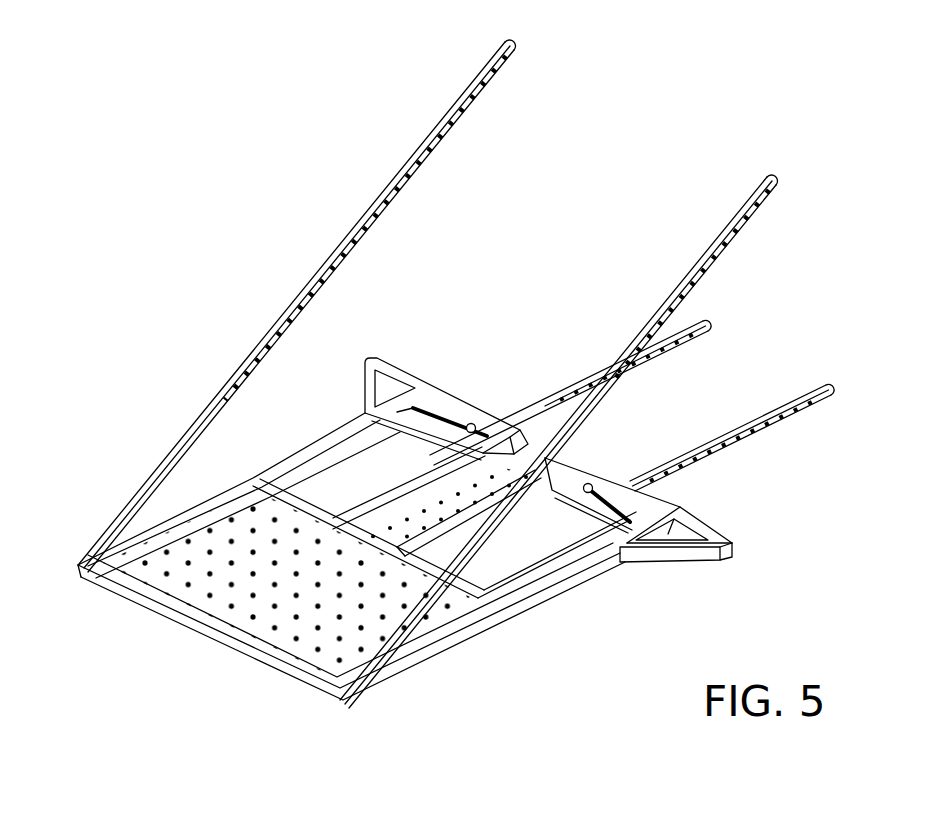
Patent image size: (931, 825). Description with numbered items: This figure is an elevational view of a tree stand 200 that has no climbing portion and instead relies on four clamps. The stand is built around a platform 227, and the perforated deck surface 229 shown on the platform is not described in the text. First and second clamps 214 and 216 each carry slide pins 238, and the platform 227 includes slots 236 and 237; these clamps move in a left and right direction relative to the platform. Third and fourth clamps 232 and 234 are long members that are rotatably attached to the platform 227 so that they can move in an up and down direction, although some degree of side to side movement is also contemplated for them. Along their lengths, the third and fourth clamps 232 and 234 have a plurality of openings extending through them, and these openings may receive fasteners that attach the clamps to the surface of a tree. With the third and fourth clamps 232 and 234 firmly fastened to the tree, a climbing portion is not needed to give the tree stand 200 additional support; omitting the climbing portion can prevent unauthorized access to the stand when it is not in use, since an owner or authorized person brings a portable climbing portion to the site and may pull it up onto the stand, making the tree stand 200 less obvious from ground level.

The tree stand 200 is at (262, 185).
The first clamp 214 is at (708, 326).
The second clamp 216 is at (783, 402).
The platform 227 is at (427, 395).
The perforated base panel 229 is at (237, 622).
The third clamp 232 is at (486, 63).
The fourth clamp 234 is at (736, 211).
The slot 236 is at (458, 418).
The slot 237 is at (633, 505).
The slide pins 238 is at (591, 484).